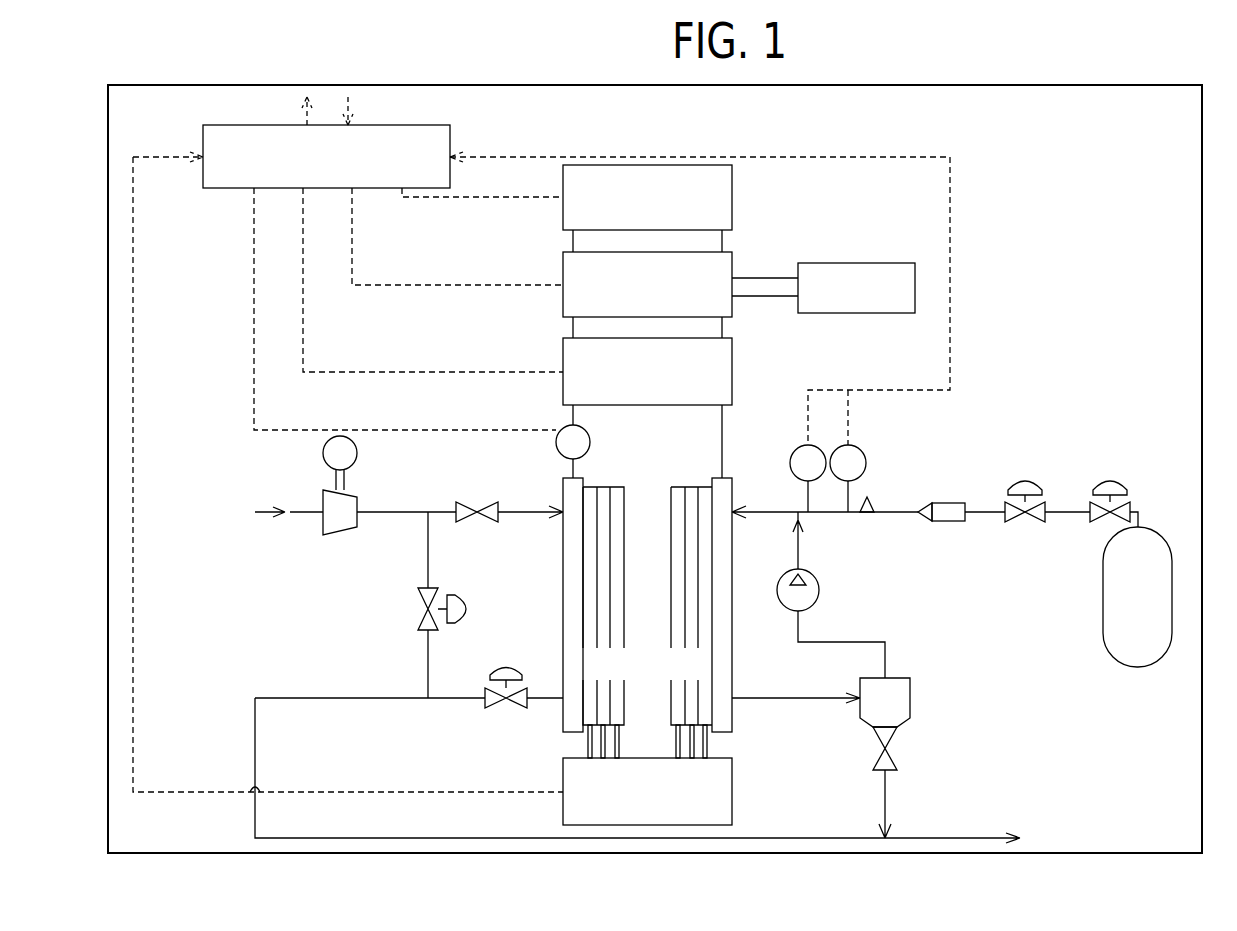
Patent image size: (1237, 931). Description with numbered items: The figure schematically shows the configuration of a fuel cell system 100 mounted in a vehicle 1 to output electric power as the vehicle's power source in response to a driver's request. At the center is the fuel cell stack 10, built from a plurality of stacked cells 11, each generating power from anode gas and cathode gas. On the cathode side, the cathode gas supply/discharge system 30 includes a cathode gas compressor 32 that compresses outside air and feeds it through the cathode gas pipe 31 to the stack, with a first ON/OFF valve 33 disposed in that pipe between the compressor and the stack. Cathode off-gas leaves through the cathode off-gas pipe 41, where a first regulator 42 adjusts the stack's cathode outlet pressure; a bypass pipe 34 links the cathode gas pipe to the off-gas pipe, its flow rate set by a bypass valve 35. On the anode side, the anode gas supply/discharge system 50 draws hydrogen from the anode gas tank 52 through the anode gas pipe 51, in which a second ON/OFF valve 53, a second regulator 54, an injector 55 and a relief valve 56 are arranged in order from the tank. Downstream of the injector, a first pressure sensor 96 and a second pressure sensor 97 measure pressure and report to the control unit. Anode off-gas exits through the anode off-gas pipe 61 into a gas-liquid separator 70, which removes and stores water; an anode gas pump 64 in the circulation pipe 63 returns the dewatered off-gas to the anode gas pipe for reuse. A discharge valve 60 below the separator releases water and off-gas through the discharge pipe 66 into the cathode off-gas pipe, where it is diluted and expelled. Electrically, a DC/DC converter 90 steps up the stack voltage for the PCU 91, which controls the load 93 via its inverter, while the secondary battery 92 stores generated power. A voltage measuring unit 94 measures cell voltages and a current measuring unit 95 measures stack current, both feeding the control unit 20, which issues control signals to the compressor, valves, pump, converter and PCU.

The vehicle 1 is at (1203, 168).
The fuel cell system 100 is at (1108, 140).
The fuel cell stack 10 is at (737, 742).
The cells 11 is at (583, 746).
The control unit 20 is at (425, 128).
The cathode gas supply/discharge system 30 is at (239, 456).
The cathode gas pipe 31 is at (428, 505).
The cathode gas compressor 32 is at (350, 492).
The first ON/OFF valve 33 is at (462, 504).
The bypass pipe 34 is at (430, 580).
The bypass valve 35 is at (470, 600).
The cathode off-gas pipe 41 is at (307, 697).
The first regulator 42 is at (498, 664).
The anode gas supply/discharge system 50 is at (1115, 420).
The anode gas pipe 51 is at (894, 512).
The anode gas tank 52 is at (1103, 582).
The second ON/OFF valve 53 is at (1113, 480).
The second regulator 54 is at (1028, 480).
The injector 55 is at (932, 503).
The relief valve 56 is at (869, 497).
The discharge valve 60 is at (892, 750).
The anode off-gas pipe 61 is at (803, 698).
The circulation pipe 63 is at (832, 642).
The anode gas pump 64 is at (783, 575).
The discharge pipe 66 is at (887, 800).
The gas-liquid separator 70 is at (900, 678).
The DC/DC converter 90 is at (735, 372).
The power control unit (PCU) 91 is at (735, 265).
The secondary battery 92 is at (735, 193).
The load 93 is at (808, 263).
The voltage measuring unit (VMU) 94 is at (735, 795).
The current measuring unit 95 is at (592, 442).
The first pressure sensor 96 is at (858, 448).
The second pressure sensor 97 is at (798, 448).